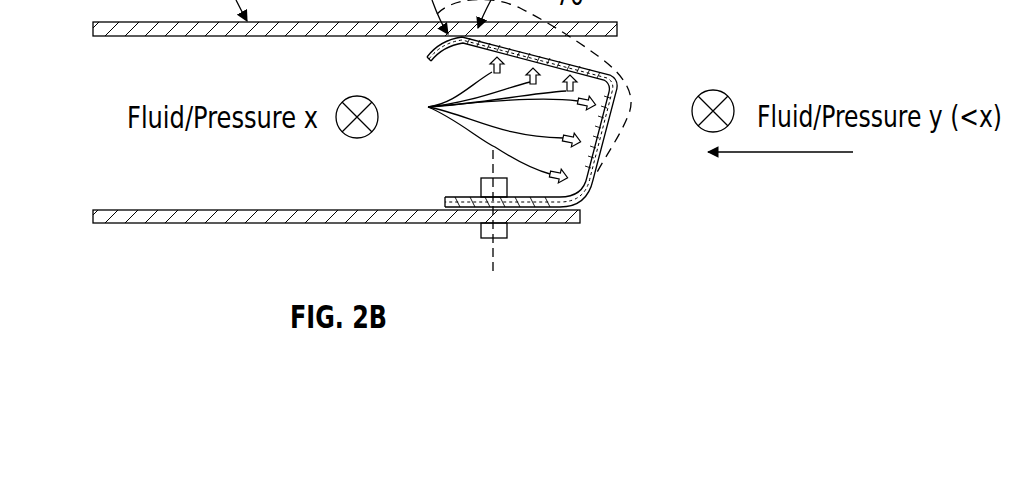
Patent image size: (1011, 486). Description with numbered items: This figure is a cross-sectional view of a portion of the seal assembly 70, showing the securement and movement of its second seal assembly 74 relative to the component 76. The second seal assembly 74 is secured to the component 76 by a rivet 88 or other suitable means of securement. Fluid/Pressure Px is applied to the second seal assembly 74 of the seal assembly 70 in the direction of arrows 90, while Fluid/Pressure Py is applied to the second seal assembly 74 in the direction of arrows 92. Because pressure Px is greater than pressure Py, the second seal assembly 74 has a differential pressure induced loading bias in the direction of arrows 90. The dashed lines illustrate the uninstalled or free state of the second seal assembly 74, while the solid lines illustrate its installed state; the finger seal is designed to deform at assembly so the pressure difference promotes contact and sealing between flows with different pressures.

The seal assembly 70 is at (581, 198).
The second seal assembly 74 is at (600, 152).
The component 76 is at (261, 226).
The rivet 88 is at (513, 243).
The arrows 90 is at (428, 107).
The arrows 92 is at (812, 152).